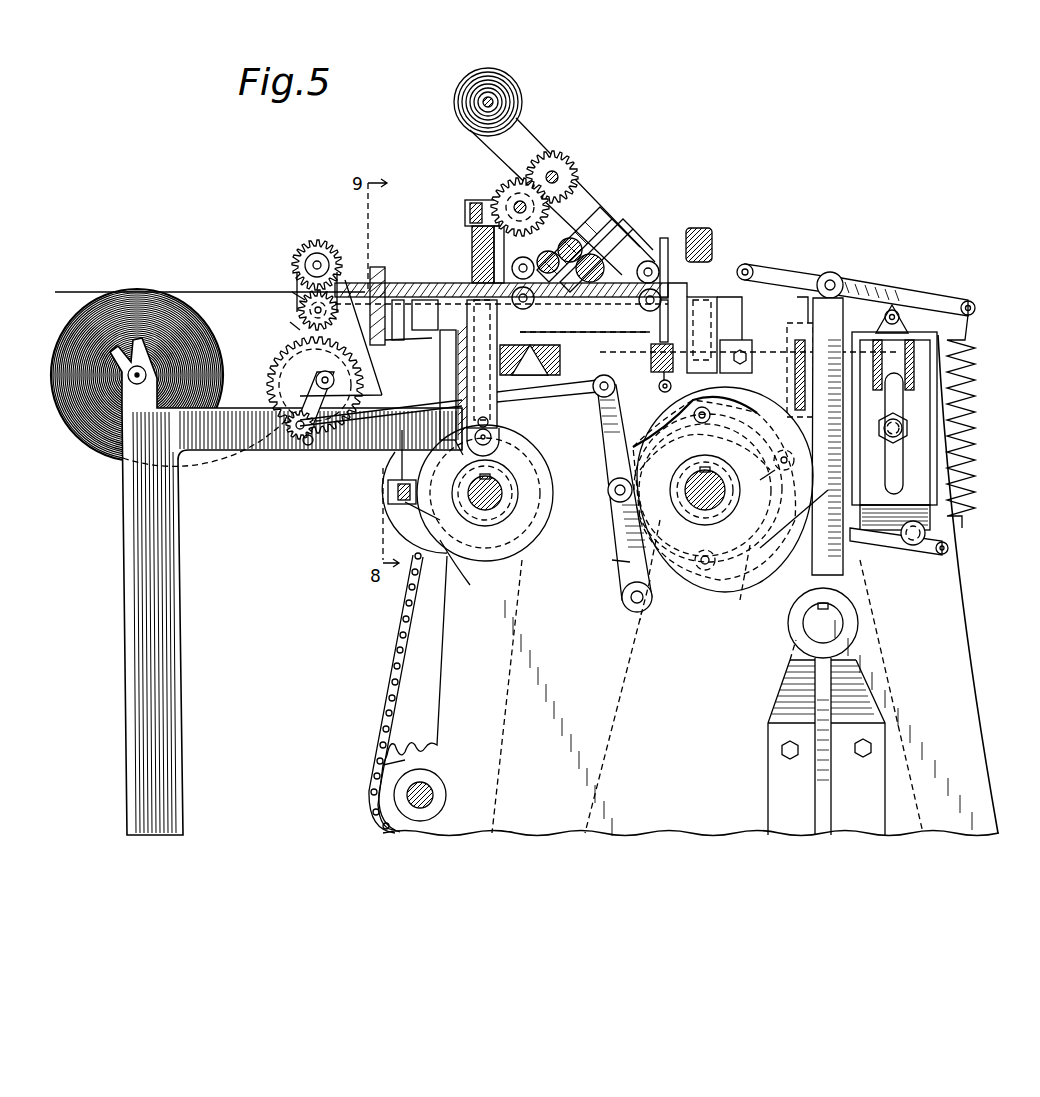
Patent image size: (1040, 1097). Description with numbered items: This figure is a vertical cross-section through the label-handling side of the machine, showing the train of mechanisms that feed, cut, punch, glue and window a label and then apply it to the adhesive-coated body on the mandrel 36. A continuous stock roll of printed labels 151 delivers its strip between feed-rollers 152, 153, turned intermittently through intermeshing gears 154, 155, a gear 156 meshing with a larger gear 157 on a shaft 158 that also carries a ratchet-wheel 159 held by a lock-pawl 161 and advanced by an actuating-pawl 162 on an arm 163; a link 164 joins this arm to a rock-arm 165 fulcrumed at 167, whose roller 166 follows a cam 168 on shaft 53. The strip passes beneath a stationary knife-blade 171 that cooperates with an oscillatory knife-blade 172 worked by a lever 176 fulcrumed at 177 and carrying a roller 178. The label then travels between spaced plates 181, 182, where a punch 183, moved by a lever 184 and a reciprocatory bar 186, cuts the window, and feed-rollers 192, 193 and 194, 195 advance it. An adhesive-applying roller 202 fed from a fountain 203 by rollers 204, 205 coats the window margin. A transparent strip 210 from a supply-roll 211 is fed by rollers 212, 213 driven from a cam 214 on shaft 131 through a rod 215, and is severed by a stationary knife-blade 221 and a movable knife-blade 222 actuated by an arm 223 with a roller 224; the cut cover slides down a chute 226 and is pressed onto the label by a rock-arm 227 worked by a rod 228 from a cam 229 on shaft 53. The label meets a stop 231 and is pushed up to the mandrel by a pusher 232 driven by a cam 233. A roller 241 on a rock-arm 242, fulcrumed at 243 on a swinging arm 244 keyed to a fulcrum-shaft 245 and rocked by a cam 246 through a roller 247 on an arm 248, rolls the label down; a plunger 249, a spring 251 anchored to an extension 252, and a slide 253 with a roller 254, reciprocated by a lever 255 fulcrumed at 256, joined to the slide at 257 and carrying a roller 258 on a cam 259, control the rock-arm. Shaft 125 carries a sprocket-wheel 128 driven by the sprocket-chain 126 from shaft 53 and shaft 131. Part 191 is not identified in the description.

The mandrel 36 is at (703, 228).
The shaft 53 is at (700, 500).
The shaft 125 is at (436, 790).
The sprocket-chain 126 is at (390, 688).
The sprocket-wheel 128 is at (378, 772).
The shaft 131 is at (495, 505).
The stock roll of printed labels 151 is at (72, 396).
The feed-roller 152 is at (330, 252).
The feed-roller 153 is at (300, 312).
The gear 154 is at (297, 268).
The gear 155 is at (292, 295).
The gear 156 is at (292, 324).
The larger gear 157 is at (282, 366).
The shaft 158 is at (305, 390).
The ratchet-wheel 159 is at (385, 420).
The lock-pawl 161 is at (288, 352).
The actuating-pawl 162 is at (310, 446).
The arm 163 is at (288, 426).
The link 164 is at (505, 425).
The rock-arm 165 is at (620, 570).
The roller 166 is at (612, 505).
The fulcrum 167 is at (634, 612).
The cam 168 is at (615, 389).
The stationary knife-blade 171 is at (372, 290).
The oscillatory knife-blade 172 is at (400, 305).
The lever 176 is at (444, 360).
The fulcrum 177 is at (410, 445).
The roller 178 is at (400, 512).
The plate 181 is at (472, 268).
The plate 182 is at (425, 312).
The punch 183 is at (472, 250).
The lever 184 is at (465, 212).
The reciprocatory bar 186 is at (500, 432).
The arm 191 is at (408, 502).
The feed-roller 192 is at (520, 262).
The feed-roller 193 is at (556, 276).
The feed-roller 194 is at (663, 238).
The feed-roller 195 is at (660, 316).
The adhesive-applying roller 202 is at (592, 284).
The fountain 203 is at (575, 330).
The roller 204 is at (602, 235).
The roller 205 is at (612, 244).
The strip of transparent material 210 is at (485, 145).
The supply-roll 211 is at (487, 68).
The feed-roller 212 is at (560, 160).
The feed-roller 213 is at (495, 198).
The cam 214 is at (464, 568).
The rod 215 is at (547, 373).
The stationary knife-blade 221 is at (600, 210).
The movable knife-blade 222 is at (575, 225).
The arm 223 is at (460, 380).
The roller 224 is at (388, 484).
The inclined chute 226 is at (618, 254).
The rock-arm 227 is at (645, 262).
The rod 228 is at (660, 340).
The cam 229 is at (605, 455).
The stop 231 is at (720, 290).
The pusher 232 is at (722, 303).
The cam 233 is at (694, 412).
The roller 241 is at (750, 264).
The rock-arm 242 is at (828, 272).
The fulcrum 243 is at (848, 280).
The swinging arm 244 is at (790, 475).
The fulcrum-shaft 245 is at (810, 630).
The cam 246 is at (813, 392).
The roller 247 is at (792, 455).
The arm 248 is at (790, 640).
The spring-actuated plunger 249 is at (797, 318).
The spring 251 is at (978, 432).
The extension 252 is at (905, 560).
The slide 253 is at (967, 300).
The roller 254 is at (896, 308).
The lever 255 is at (913, 546).
The fulcrum 256 is at (798, 510).
The connection 257 is at (946, 540).
The roller 258 is at (735, 560).
The cam 259 is at (765, 590).